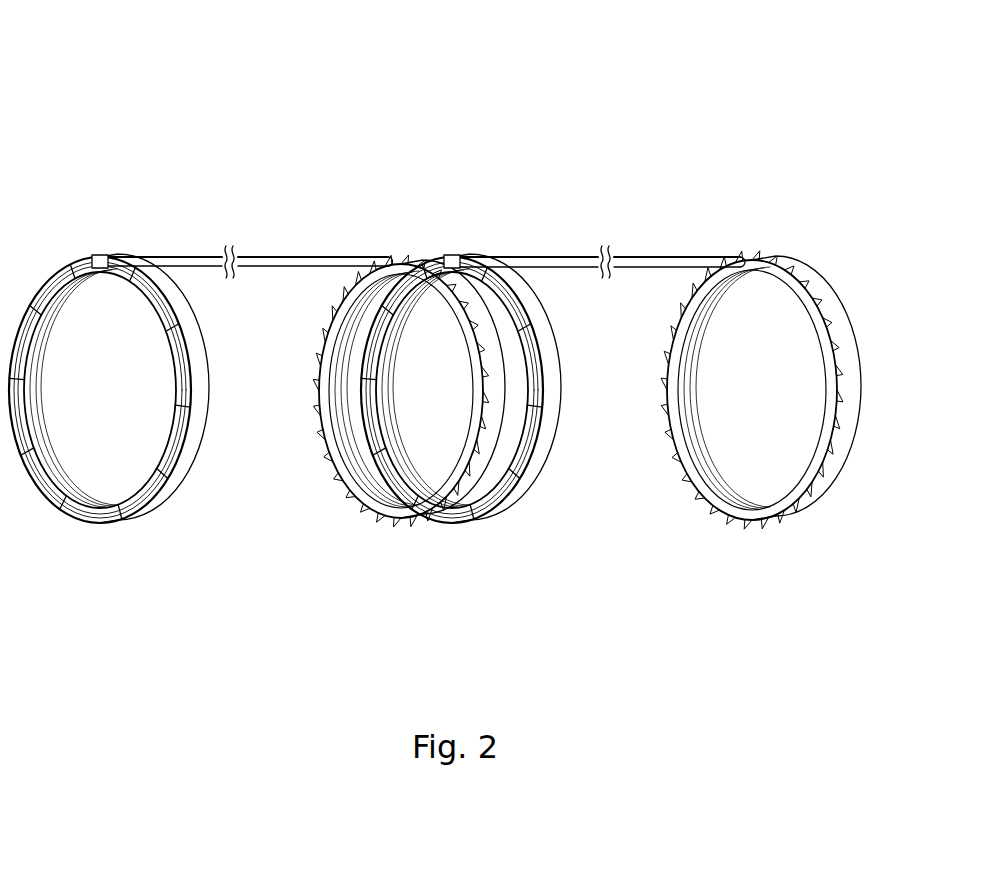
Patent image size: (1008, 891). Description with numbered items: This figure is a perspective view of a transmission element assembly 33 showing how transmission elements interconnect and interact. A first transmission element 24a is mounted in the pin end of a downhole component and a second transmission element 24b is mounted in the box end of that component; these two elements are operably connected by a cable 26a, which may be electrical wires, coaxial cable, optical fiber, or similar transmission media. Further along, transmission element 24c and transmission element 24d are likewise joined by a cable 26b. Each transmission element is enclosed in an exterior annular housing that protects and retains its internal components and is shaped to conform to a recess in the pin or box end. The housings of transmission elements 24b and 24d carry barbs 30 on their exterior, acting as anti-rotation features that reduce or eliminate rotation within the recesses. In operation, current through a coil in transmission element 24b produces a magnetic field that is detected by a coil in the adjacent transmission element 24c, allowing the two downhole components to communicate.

The transmission element assembly 33 is at (158, 97).
The first transmission element 24a is at (131, 566).
The second transmission element 24b is at (396, 555).
The transmission element 24c is at (515, 555).
The transmission element 24d is at (765, 555).
The cable 26a is at (258, 257).
The cable 26b is at (640, 257).
The barbs 30 is at (312, 432).